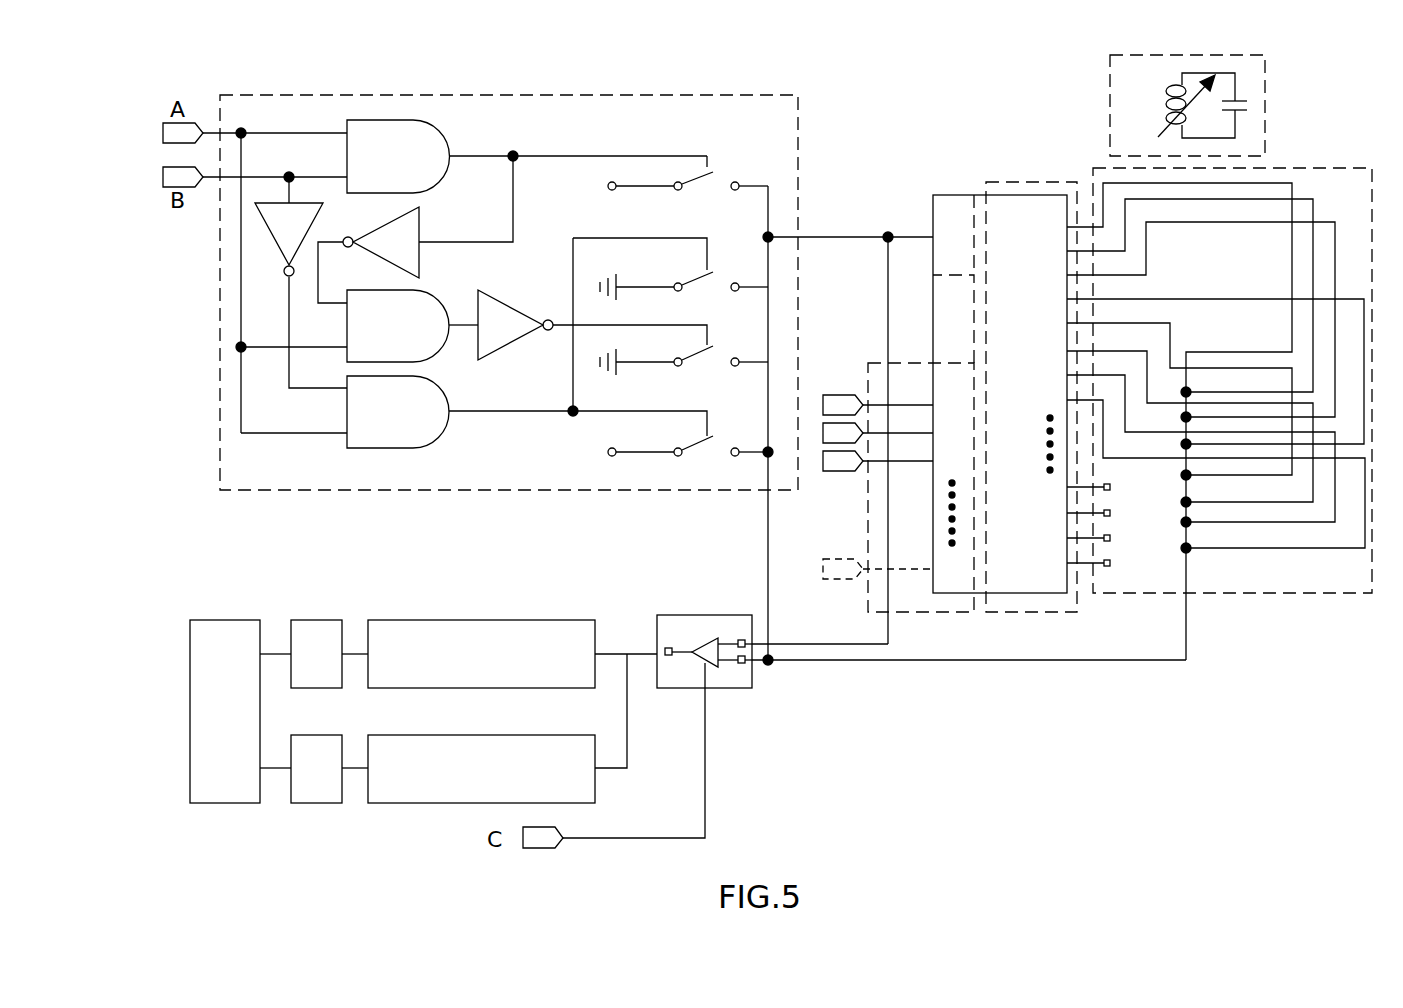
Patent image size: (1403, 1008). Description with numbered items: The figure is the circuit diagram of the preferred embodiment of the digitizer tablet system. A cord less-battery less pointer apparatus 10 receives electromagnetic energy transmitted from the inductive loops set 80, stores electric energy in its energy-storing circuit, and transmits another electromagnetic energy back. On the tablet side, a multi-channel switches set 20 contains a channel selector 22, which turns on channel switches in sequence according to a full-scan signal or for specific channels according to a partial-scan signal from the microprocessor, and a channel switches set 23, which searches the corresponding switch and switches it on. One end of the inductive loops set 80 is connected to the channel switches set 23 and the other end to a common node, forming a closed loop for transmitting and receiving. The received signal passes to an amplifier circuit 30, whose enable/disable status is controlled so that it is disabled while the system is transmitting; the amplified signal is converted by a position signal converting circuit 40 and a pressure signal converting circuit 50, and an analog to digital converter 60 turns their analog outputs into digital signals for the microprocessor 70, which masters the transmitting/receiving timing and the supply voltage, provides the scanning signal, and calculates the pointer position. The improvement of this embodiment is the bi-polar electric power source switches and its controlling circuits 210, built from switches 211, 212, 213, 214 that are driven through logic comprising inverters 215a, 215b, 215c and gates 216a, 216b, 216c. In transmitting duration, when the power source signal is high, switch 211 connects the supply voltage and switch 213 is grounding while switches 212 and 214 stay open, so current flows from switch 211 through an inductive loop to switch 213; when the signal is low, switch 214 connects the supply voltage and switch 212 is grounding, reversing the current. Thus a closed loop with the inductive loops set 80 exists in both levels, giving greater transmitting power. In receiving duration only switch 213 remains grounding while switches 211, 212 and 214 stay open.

The cord less-battery less pointer apparatus 10 is at (1268, 100).
The multi-channel switches set 20 is at (975, 195).
The channel selector 22 is at (897, 612).
The channel switches set 23 is at (1070, 612).
The amplifier circuit 30 is at (678, 615).
The position signal converting circuit 40 is at (461, 664).
The pressure signal converting circuit 50 is at (461, 779).
The analog to digital converter 60 is at (328, 667).
The microprocessor 70 is at (236, 717).
The inductive loops set 80 is at (1230, 595).
The bi-polar electric power source switches and its controlling circuits 210 is at (675, 492).
The switch 211 is at (717, 170).
The switch 212 is at (717, 290).
The switch 213 is at (717, 356).
The switch 214 is at (720, 448).
The inverter 215a is at (510, 348).
The inverter 215b is at (273, 240).
The inverter 215c is at (350, 247).
The AND gate 216a is at (421, 168).
The AND gate 216b is at (421, 337).
The AND gate 216c is at (421, 423).